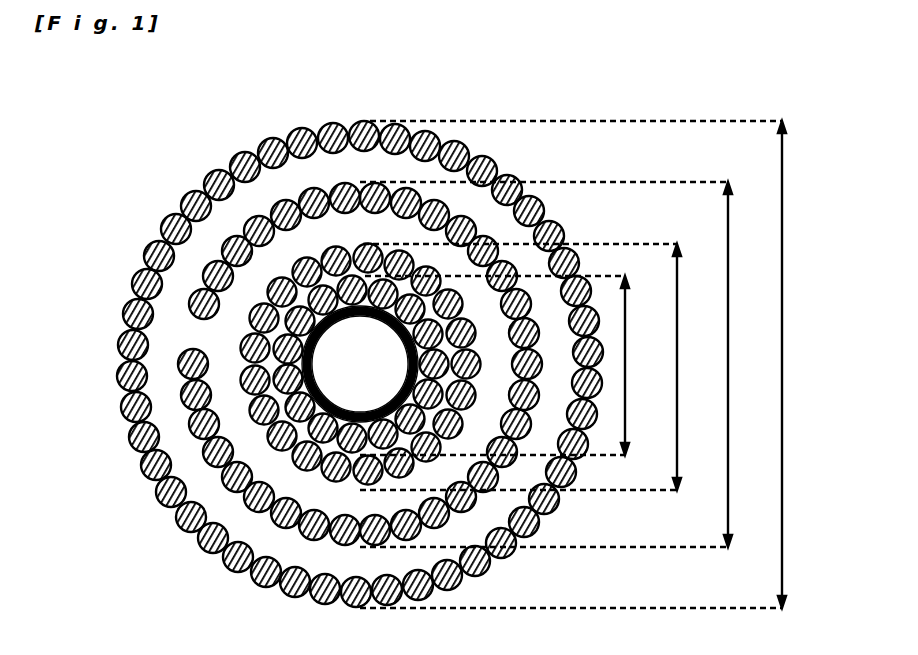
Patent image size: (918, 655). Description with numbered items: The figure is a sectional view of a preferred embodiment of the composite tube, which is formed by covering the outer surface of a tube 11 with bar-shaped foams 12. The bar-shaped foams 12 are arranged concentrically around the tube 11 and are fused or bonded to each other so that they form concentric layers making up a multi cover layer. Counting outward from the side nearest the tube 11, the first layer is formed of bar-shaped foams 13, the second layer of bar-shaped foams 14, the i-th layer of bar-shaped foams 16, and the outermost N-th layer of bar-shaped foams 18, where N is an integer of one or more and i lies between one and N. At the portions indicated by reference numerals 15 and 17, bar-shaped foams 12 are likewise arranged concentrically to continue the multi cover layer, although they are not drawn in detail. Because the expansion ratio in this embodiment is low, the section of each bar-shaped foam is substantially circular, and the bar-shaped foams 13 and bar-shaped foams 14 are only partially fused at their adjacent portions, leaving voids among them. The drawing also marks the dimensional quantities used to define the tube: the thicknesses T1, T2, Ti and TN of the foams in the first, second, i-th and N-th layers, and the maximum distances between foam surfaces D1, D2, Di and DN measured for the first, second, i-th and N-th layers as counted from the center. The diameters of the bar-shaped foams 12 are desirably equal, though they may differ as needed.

The tube 11 is at (272, 436).
The bar-shaped foams 12 is at (241, 237).
The bar-shaped foams of first layer 13 is at (298, 312).
The bar-shaped foams of second layer 14 is at (276, 352).
The portion of concentric foam arrangement 15 is at (192, 318).
The bar-shaped foams of i-th layer 16 is at (240, 348).
The portion of concentric foam arrangement 17 is at (178, 362).
The bar-shaped foams of N-th layer 18 is at (118, 357).
The thickness of first-layer foam T1 is at (278, 386).
The thickness of second-layer foam T2 is at (242, 383).
The thickness of i-th layer foam Ti is at (185, 387).
The thickness of N-th layer foam TN is at (125, 380).
The maximum distance between surfaces of first-layer foam D1 is at (506, 365).
The maximum distance between surfaces of second-layer foam D2 is at (531, 367).
The maximum distance between surfaces of i-th layer foam Di is at (556, 364).
The maximum distance between surfaces of N-th layer foam DN is at (585, 364).